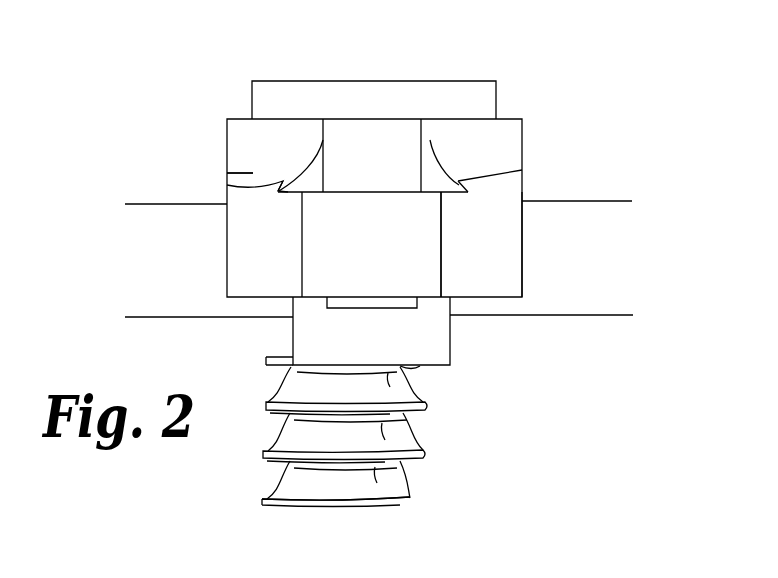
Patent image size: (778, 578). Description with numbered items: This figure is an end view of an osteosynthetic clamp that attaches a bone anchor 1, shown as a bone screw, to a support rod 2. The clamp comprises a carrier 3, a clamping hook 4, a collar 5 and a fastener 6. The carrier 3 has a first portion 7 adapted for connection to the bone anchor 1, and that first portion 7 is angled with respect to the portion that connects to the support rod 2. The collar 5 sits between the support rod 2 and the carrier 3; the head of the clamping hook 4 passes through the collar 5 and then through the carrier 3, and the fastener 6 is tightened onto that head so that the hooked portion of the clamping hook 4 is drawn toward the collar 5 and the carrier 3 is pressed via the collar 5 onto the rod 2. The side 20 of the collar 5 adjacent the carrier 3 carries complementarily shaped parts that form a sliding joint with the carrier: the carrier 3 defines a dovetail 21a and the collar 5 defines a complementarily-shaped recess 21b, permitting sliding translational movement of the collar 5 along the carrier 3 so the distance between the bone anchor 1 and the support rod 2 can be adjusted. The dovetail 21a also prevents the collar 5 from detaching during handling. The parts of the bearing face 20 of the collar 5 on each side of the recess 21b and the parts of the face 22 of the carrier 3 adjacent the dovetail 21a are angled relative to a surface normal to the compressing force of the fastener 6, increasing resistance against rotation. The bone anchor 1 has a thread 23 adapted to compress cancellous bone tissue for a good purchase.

The bone anchor 1 is at (410, 455).
The support rod 2 is at (590, 268).
The carrier 3 is at (237, 140).
The clamping hook 4 is at (408, 300).
The collar 5 is at (507, 228).
The fastener 6 is at (481, 105).
The first portion 7 is at (495, 172).
The side of the collar 20 is at (230, 183).
The dovetail 21a is at (430, 140).
The complementarily-shaped recess 21b is at (283, 181).
The face of the carrier 22 is at (252, 173).
The thread 23 is at (265, 460).